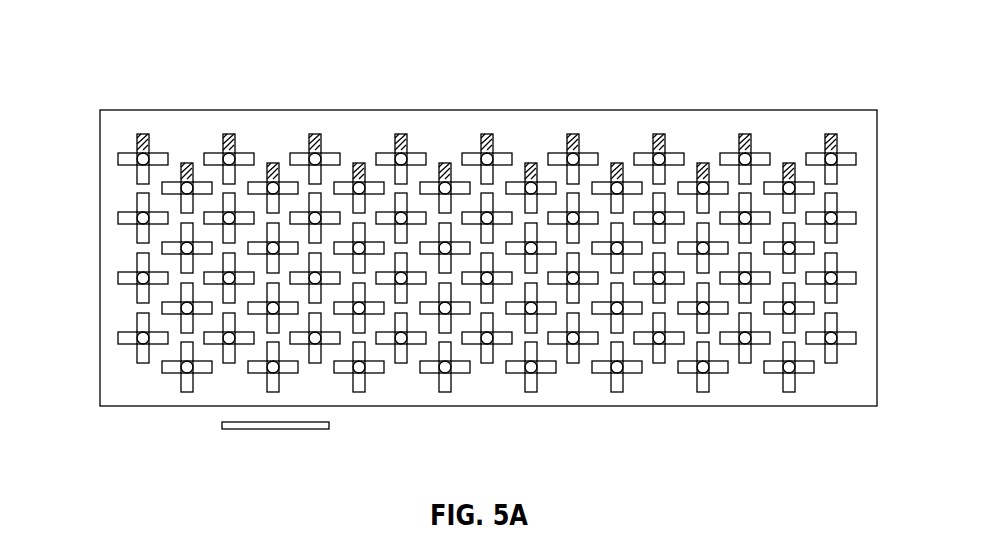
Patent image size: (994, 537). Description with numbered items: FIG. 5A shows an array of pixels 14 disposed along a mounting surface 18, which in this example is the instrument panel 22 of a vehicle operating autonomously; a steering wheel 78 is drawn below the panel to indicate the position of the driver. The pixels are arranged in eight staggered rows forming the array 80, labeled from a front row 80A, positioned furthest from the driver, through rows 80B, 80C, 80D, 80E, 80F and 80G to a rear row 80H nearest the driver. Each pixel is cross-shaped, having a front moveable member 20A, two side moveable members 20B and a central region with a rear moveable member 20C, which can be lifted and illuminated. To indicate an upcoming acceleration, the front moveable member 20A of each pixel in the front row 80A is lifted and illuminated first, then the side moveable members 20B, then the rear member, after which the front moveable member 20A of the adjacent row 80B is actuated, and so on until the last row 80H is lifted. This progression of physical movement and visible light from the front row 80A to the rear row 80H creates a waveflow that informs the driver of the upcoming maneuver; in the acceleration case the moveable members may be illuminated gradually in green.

The array of pixels 14 is at (778, 58).
The instrument panel 22 is at (442, 125).
The array of pixels 80 is at (880, 139).
The front row 80A is at (136, 112).
The row of pixels 80B is at (154, 188).
The third row of antenna elements 80C is at (110, 219).
The fourth row of antenna elements 80D is at (154, 248).
The fifth row of antenna elements 80E is at (110, 279).
The sixth row of antenna elements 80F is at (154, 308).
The seventh row of antenna elements 80G is at (110, 339).
The rear row of pixels 80H is at (168, 383).
The front moveable member 20A is at (143, 134).
The side moveable members 20B is at (132, 151).
The rear moveable member 20C is at (152, 160).
The mounting surface 18 is at (415, 398).
The steering wheel 78 is at (329, 426).